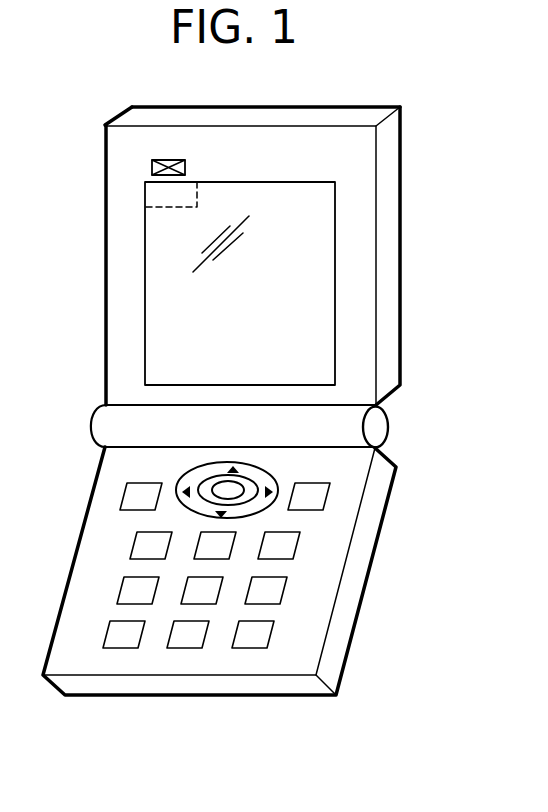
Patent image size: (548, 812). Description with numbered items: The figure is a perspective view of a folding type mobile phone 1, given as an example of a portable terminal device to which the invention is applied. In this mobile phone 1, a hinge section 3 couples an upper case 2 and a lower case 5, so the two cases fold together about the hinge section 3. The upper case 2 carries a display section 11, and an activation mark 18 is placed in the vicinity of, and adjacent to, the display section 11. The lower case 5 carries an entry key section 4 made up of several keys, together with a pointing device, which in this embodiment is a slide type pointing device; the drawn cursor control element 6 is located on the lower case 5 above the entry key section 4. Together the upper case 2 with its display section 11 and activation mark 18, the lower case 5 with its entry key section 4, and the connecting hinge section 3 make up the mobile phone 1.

The mobile phone 1 is at (343, 100).
The upper case 2 is at (357, 190).
The hinge section 3 is at (338, 427).
The entry key section 4 is at (282, 590).
The lower case 5 is at (372, 520).
The cursor key 6 is at (190, 477).
The display section 11 is at (320, 335).
The activation mark 18 is at (152, 167).